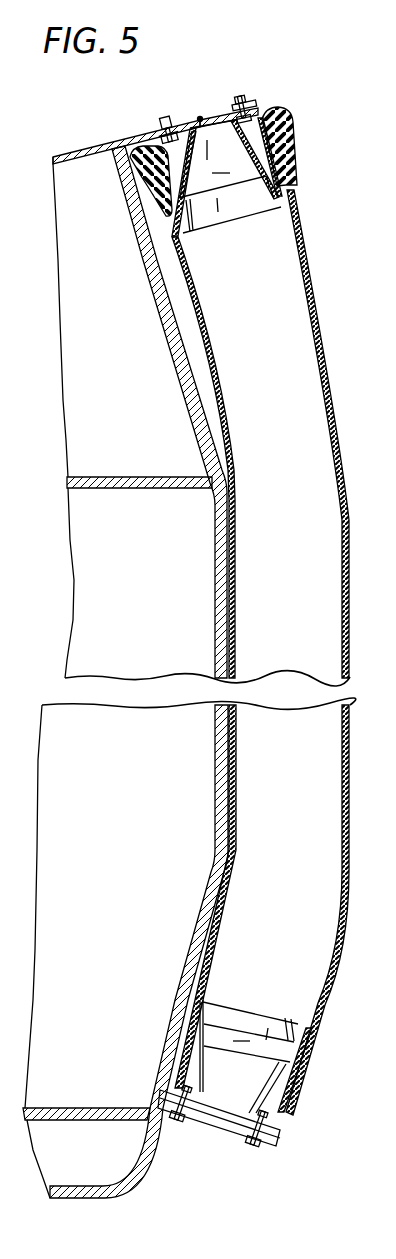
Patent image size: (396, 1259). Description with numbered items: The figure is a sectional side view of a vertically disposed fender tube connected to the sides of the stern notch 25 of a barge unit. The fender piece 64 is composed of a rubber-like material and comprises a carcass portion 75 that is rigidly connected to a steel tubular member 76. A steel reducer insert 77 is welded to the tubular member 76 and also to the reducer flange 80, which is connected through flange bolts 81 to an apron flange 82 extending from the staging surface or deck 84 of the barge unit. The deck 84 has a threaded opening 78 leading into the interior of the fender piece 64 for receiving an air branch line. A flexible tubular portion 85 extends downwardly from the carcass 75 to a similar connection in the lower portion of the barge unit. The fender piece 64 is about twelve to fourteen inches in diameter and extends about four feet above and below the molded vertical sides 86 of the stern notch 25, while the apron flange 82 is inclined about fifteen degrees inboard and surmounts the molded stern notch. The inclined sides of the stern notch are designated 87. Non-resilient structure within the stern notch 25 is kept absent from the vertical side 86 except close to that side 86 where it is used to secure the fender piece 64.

The stern notch 25 is at (231, 481).
The fender piece 64 is at (342, 353).
The carcass portion 75 is at (292, 123).
The tubular member 76 is at (258, 109).
The reducer insert 77 is at (245, 616).
The threaded opening 78 is at (201, 117).
The reducer flange 80 is at (163, 118).
The flange bolts 81 is at (180, 128).
The apron flange 82 is at (214, 111).
The deck 84 is at (82, 151).
The flexible tubular portion 85 is at (352, 779).
The molded vertical sides 86 is at (212, 603).
The inclined sides 87 is at (163, 338).